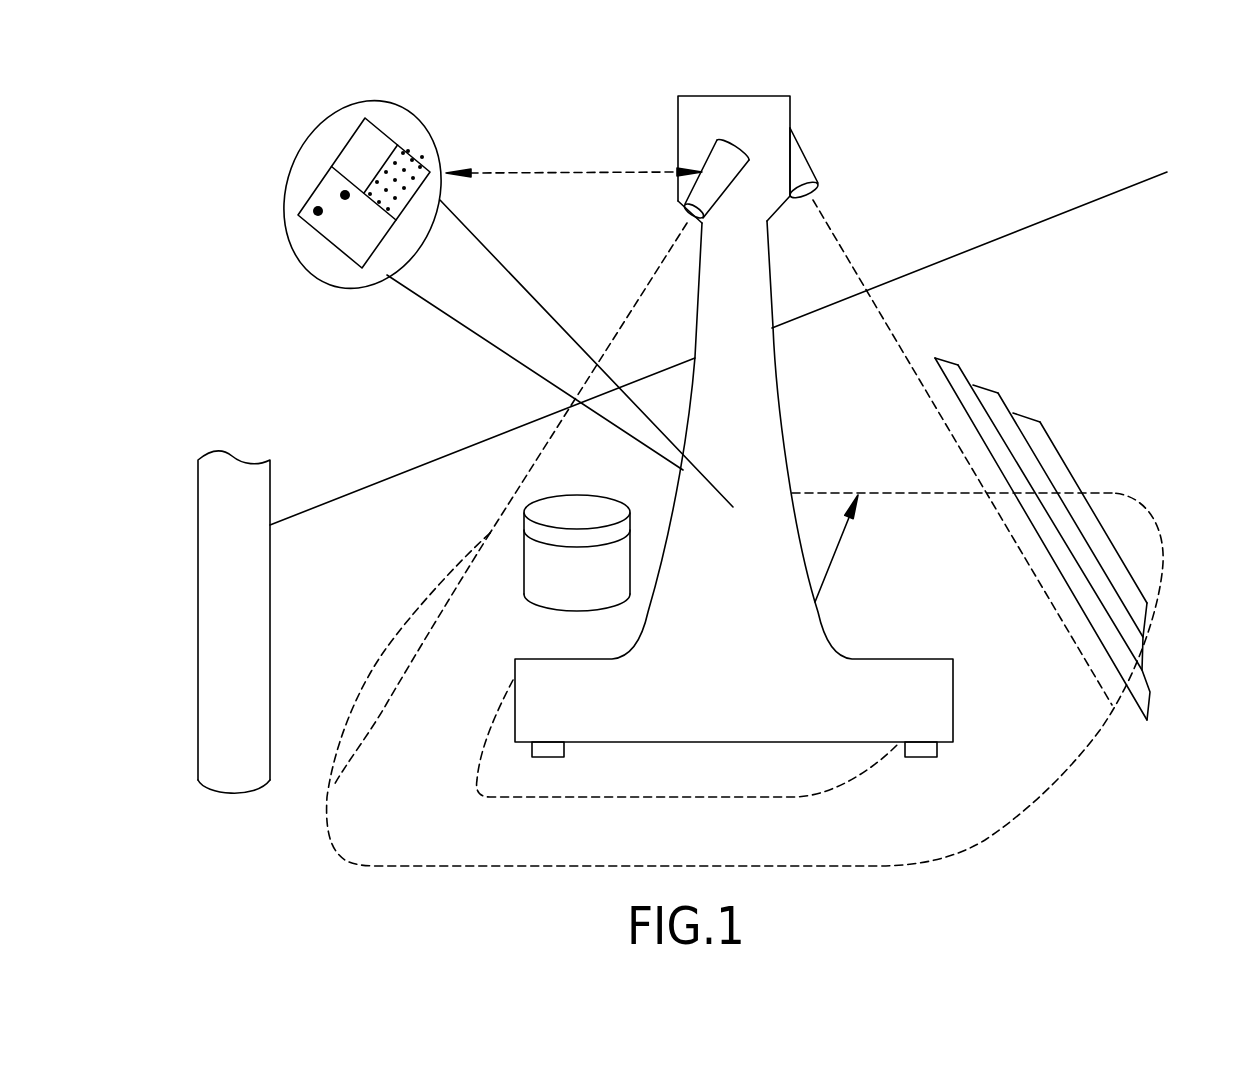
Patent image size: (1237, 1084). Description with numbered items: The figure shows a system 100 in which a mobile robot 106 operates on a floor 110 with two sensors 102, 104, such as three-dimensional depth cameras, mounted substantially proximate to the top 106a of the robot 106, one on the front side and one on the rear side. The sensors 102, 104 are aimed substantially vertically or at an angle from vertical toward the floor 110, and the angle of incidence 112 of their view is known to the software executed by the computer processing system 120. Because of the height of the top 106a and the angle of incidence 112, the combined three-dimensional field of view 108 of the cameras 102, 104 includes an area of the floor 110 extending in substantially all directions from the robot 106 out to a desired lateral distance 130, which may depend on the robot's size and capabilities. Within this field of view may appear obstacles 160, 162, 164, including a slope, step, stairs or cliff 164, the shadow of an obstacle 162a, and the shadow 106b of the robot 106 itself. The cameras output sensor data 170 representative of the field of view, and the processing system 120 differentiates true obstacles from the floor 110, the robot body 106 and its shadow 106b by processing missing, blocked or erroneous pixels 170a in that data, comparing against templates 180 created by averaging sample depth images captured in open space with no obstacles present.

The system 100 is at (1160, 109).
The sensor 102 is at (685, 207).
The sensor 104 is at (810, 163).
The mobile robot 106 is at (734, 404).
The top of the mobile robot 106a is at (767, 129).
The shadow of the robot 106b is at (690, 797).
The three-dimensional field of view 108 is at (1135, 505).
The floor 110 is at (1035, 223).
The angle of incidence 112 is at (905, 355).
The computer processing system 120 is at (328, 172).
The desired lateral distance 130 is at (833, 560).
The obstacle 160 is at (538, 603).
The obstacle 162 is at (270, 595).
The shadow of an obstacle 162a is at (367, 677).
The stairs or cliff obstacle 164 is at (1057, 448).
The sensor data 170 is at (573, 173).
The missing, blocked or erroneous pixels 170a is at (402, 173).
The template 180 is at (329, 215).